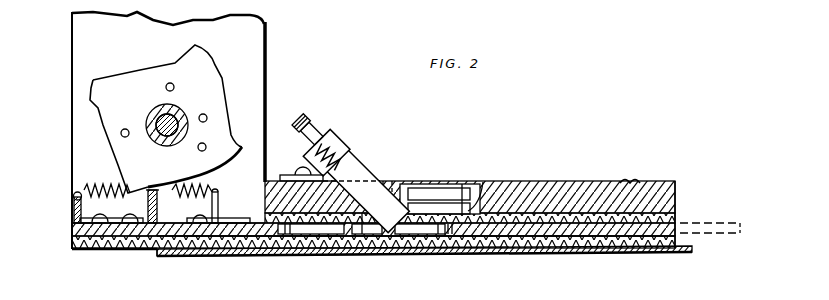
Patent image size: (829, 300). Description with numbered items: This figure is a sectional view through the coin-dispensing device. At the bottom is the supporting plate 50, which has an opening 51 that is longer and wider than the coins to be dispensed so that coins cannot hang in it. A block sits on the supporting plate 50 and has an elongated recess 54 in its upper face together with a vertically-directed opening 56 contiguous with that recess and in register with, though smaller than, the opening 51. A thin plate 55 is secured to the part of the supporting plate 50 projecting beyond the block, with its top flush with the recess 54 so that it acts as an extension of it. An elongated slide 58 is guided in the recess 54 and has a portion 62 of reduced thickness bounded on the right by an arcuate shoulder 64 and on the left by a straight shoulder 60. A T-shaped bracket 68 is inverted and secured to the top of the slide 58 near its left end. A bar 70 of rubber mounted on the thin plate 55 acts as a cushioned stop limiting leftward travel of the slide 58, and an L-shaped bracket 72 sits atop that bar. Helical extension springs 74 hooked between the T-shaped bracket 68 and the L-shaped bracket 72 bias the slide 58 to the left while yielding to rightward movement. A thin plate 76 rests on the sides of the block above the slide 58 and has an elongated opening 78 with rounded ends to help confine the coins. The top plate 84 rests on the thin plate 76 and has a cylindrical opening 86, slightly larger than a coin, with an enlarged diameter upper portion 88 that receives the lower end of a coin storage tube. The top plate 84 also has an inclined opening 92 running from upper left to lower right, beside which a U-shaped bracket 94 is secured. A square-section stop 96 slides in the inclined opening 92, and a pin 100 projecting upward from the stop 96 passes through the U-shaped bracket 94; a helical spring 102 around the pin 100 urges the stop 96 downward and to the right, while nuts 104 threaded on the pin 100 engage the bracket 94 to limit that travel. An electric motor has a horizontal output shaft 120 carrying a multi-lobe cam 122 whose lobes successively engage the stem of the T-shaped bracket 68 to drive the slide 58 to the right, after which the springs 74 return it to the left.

The supporting plate 50 is at (637, 253).
The opening 51 is at (322, 256).
The elongated recess 54 is at (603, 235).
The thin plate 55 is at (252, 33).
The vertically-directed opening 56 is at (355, 240).
The elongated slide 58 is at (233, 230).
The straight shoulder 60 is at (260, 254).
The portion of reduced thickness 62 is at (408, 228).
The arcuate shoulder 64 is at (414, 232).
The T-shaped bracket 68 is at (222, 212).
The bar of resilient material 70 is at (83, 250).
The L-shaped bracket 72 is at (73, 212).
The helical extension springs 74 is at (88, 184).
The thin plate 76 is at (648, 183).
The elongated opening 78 is at (368, 226).
The top plate 84 is at (592, 187).
The cylindrical opening 86 is at (493, 184).
The enlarged diameter upper portion 88 is at (473, 207).
The inclined opening 92 is at (383, 180).
The U-shaped bracket 94 is at (353, 143).
The stop 96 is at (370, 170).
The pin 100 is at (310, 125).
The helical spring 102 is at (345, 138).
The nuts 104 is at (334, 132).
The output shaft 120 is at (160, 112).
The multi-lobe cam 122 is at (205, 95).